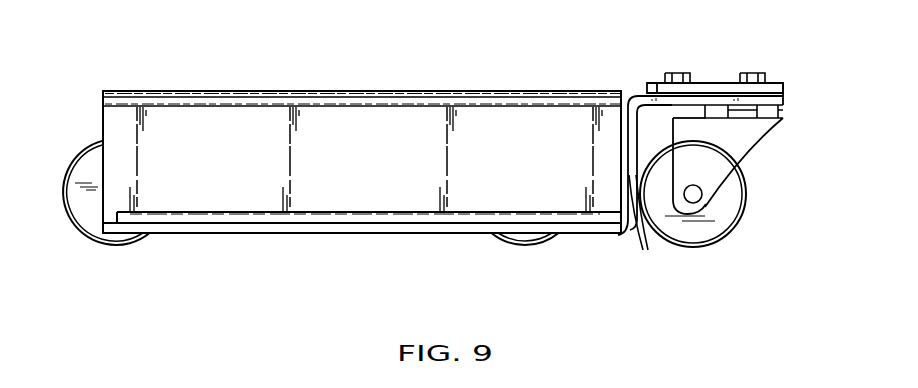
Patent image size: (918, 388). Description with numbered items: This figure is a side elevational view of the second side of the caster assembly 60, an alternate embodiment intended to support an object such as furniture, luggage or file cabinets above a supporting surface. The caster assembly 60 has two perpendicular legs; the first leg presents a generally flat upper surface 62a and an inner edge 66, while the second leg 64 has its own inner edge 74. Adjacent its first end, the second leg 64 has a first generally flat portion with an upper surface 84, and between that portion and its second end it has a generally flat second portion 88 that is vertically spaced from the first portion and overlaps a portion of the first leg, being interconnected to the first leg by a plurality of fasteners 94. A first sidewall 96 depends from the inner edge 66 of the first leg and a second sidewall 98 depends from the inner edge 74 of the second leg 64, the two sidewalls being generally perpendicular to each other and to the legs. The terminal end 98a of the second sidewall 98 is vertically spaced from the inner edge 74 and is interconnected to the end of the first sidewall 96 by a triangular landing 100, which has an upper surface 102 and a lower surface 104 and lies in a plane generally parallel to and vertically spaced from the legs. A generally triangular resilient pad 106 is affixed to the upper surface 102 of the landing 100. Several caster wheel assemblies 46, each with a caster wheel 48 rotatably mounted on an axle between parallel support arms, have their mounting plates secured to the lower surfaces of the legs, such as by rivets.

The caster wheel assembly 46 is at (759, 153).
The caster wheel 48 is at (74, 229).
The caster assembly 60 is at (120, 291).
The upper surface 62a is at (312, 90).
The second leg 64 is at (788, 104).
The inner edge 66 is at (250, 99).
The inner edge 74 is at (633, 90).
The upper surface 84 is at (656, 83).
The second portion 88 is at (788, 82).
The fasteners 94 is at (754, 70).
The first sidewall 96 is at (373, 167).
The second sidewall 98 is at (641, 233).
The terminal end 98a is at (622, 240).
The triangular landing 100 is at (348, 236).
The upper surface 102 is at (270, 214).
The lower surface 104 is at (300, 236).
The resilient pad 106 is at (190, 218).